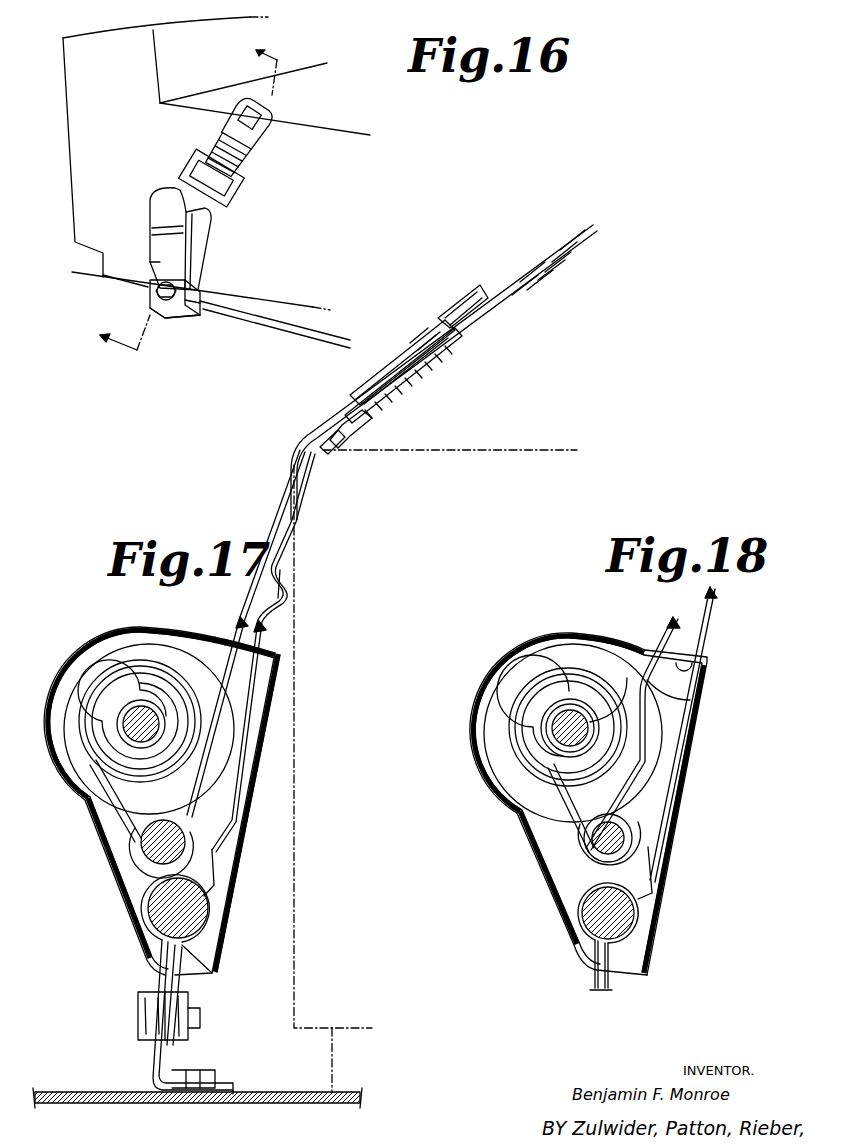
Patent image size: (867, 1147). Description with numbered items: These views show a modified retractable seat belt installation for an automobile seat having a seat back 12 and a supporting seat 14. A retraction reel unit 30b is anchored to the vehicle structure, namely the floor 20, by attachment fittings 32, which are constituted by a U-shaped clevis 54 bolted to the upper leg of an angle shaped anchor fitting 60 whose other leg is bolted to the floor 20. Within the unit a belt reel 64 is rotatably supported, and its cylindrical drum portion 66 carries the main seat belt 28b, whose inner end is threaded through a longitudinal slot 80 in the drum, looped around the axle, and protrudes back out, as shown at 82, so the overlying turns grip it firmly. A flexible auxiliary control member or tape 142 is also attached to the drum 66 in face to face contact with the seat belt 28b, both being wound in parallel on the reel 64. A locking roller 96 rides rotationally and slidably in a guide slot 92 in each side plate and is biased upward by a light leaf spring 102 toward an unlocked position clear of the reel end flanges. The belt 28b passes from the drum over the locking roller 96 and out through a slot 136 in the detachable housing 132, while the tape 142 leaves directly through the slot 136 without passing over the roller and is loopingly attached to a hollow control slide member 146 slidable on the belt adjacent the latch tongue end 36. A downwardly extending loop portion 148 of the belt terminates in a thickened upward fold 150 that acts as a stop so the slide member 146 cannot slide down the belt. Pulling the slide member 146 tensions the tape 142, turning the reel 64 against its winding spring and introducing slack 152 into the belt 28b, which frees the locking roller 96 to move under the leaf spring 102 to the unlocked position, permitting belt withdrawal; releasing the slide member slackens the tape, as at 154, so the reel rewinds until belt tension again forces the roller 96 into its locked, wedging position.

In FIG. 16, the seat back 12 is at (160, 68).
In FIG. 16, the supporting seat 14 is at (340, 128).
In FIG. 17, the supporting seat 14 is at (296, 652).
In FIG. 16, the floor 20 is at (247, 318).
In FIG. 17, the main seat belt 28b is at (292, 548).
In FIG. 18, the main seat belt 28b is at (703, 617).
In FIG. 16, the retraction reel unit 30b is at (205, 242).
In FIG. 16, the attachment fittings 32 is at (142, 298).
In FIG. 16, the latch tongue end 36 is at (262, 135).
In FIG. 17, the latch tongue end 36 is at (530, 283).
In FIG. 17, the clevis 54 is at (161, 968).
In FIG. 18, the clevis 54 is at (595, 985).
In FIG. 16, the anchor fitting 60 is at (165, 312).
In FIG. 17, the anchor fitting 60 is at (155, 1072).
In FIG. 17, the belt reel 64 is at (112, 652).
In FIG. 18, the belt reel 64 is at (540, 658).
In FIG. 17, the cylindrical drum portion 66 is at (124, 705).
In FIG. 18, the longitudinal slot 80 is at (600, 712).
In FIG. 18, the protruding belt end 82 is at (555, 788).
In FIG. 17, the guide slot 92 is at (187, 815).
In FIG. 17, the locking roller 96 is at (143, 833).
In FIG. 18, the locking roller 96 is at (634, 822).
In FIG. 17, the leaf spring 102 is at (222, 875).
In FIG. 18, the leaf spring 102 is at (650, 860).
In FIG. 17, the housing 132 is at (63, 783).
In FIG. 18, the housing 132 is at (575, 614).
In FIG. 17, the housing slot 136 is at (223, 640).
In FIG. 18, the housing slot 136 is at (698, 673).
In FIG. 17, the auxiliary control member 142 is at (243, 598).
In FIG. 18, the auxiliary control member 142 is at (673, 617).
In FIG. 16, the control slide member 146 is at (185, 176).
In FIG. 17, the control slide member 146 is at (426, 382).
In FIG. 17, the loop portion 148 is at (355, 420).
In FIG. 17, the upward fold 150 is at (338, 445).
In FIG. 17, the slack in seat belt 152 is at (291, 598).
In FIG. 18, the slack in control member 154 is at (687, 692).